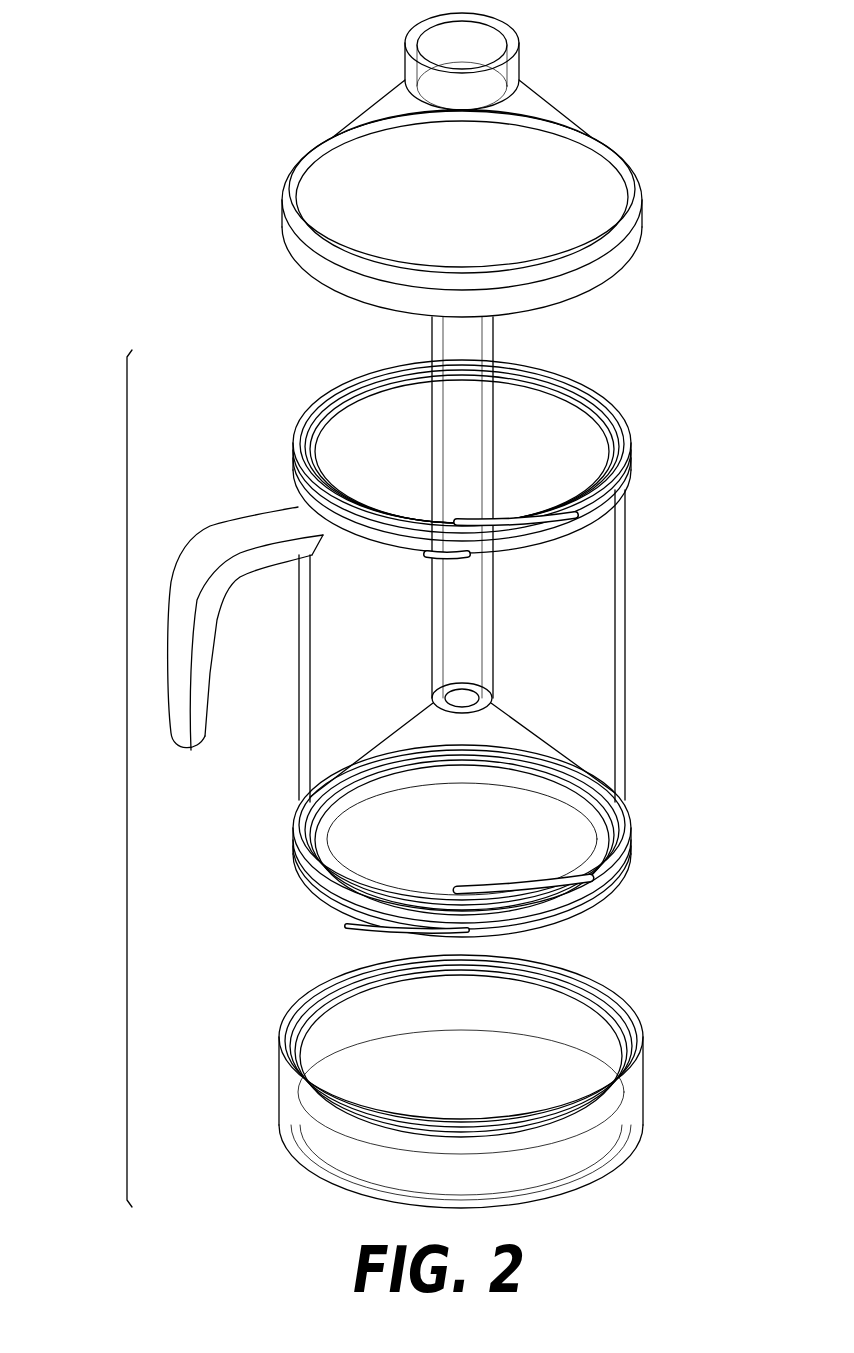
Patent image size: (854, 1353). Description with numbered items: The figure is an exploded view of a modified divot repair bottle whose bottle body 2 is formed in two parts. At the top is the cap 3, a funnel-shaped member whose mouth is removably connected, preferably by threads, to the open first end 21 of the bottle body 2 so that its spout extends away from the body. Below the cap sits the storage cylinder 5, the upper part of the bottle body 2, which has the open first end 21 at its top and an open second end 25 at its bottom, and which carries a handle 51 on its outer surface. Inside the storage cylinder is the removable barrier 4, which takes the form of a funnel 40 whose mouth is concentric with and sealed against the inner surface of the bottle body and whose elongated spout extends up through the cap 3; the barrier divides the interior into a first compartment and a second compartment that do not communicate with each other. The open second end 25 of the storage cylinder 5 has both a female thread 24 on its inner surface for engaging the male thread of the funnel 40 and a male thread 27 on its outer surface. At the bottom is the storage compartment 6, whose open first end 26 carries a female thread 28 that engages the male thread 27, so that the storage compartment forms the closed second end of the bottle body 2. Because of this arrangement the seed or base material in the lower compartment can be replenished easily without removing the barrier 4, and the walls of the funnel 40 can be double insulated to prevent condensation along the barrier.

The bottle body 2 is at (127, 778).
The cap 3 is at (563, 116).
The removable barrier 4 is at (497, 333).
The open first end 21 is at (631, 441).
The handle 51 is at (211, 527).
The storage cylinder 5 is at (625, 638).
The funnel 40 is at (530, 733).
The male thread 27 is at (631, 807).
The female thread 24 is at (298, 829).
The open second end 25 is at (631, 840).
The open first end 26 is at (633, 1020).
The female thread 28 is at (590, 1000).
The storage compartment 6 is at (643, 1100).